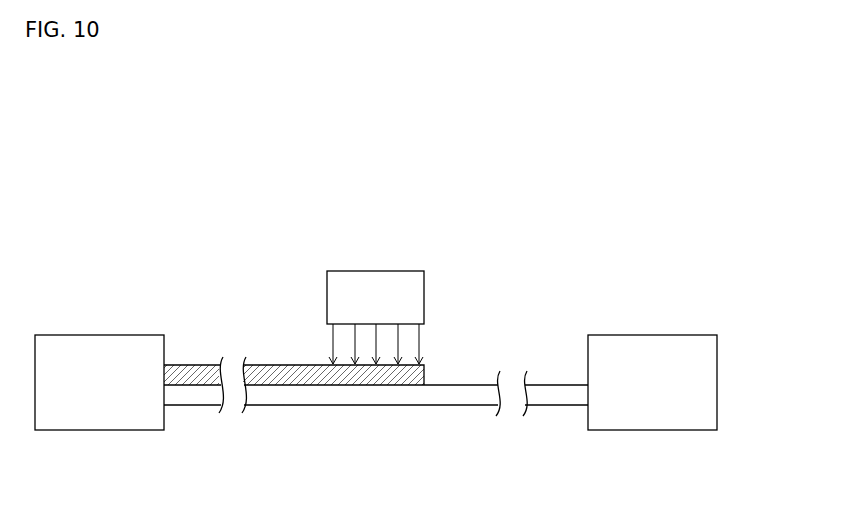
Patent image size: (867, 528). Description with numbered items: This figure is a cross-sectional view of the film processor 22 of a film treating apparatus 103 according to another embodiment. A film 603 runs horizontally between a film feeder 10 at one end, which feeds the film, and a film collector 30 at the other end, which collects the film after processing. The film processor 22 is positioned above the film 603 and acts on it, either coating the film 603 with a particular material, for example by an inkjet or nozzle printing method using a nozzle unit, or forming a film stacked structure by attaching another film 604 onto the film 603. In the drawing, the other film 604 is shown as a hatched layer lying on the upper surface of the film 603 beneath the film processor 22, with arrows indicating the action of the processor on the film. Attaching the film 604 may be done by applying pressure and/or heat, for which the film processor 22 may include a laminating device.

The film treating apparatus 103 is at (542, 192).
The film collector 30 is at (102, 420).
The film feeder 10 is at (675, 420).
The film processor 22 is at (375, 283).
The film 603 is at (298, 395).
The another film 604 is at (286, 372).